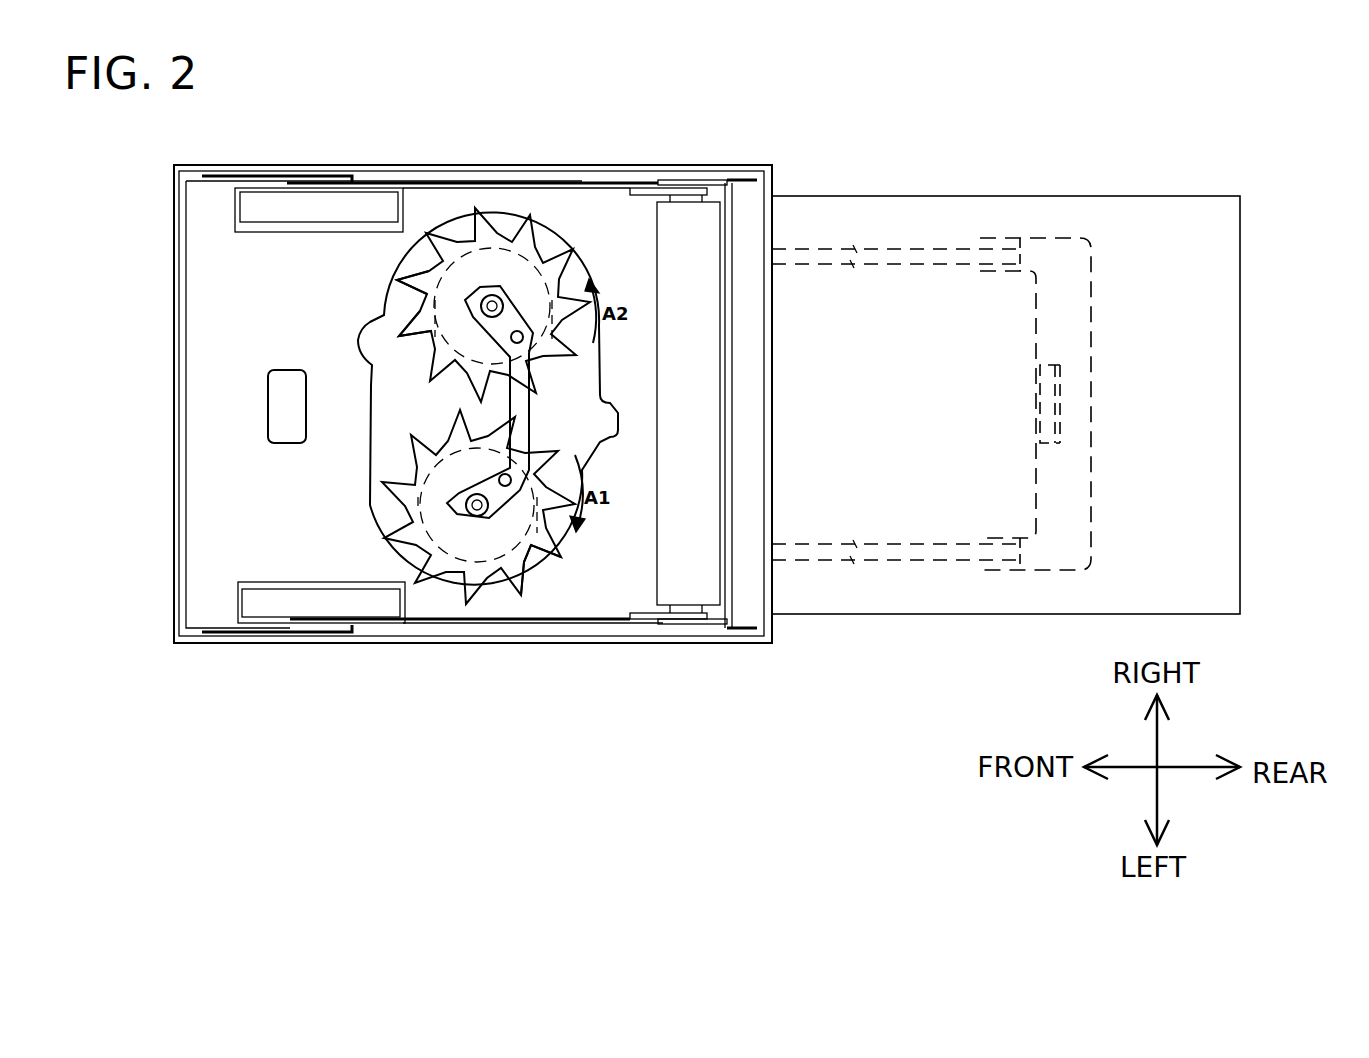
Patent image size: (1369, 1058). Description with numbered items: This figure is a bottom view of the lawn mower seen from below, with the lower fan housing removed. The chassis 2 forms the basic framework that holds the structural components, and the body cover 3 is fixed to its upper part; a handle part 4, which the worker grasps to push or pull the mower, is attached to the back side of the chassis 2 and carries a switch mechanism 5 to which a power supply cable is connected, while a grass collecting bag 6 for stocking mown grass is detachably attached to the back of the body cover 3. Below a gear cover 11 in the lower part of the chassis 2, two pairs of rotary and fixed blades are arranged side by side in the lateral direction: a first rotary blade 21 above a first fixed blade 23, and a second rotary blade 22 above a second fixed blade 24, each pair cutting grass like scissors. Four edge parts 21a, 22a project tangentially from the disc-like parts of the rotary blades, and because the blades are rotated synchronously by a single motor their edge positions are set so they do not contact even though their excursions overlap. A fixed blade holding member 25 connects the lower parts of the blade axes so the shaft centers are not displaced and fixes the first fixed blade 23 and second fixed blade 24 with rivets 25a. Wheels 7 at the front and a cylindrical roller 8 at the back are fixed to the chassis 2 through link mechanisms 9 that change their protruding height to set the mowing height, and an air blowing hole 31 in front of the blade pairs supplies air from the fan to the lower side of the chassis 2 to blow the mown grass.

The chassis 2 is at (245, 287).
The body cover 3 is at (174, 200).
The handle part 4 is at (1068, 238).
The switch mechanism 5 is at (1037, 402).
The grass collecting bag 6 is at (952, 614).
The wheels 7 is at (316, 205).
The roller 8 is at (700, 235).
The link mechanisms 9 is at (618, 183).
The gear cover 11 is at (378, 508).
The first rotary blade 21 is at (485, 565).
The edge parts 21a is at (545, 568).
The second rotary blade 22 is at (492, 245).
The edge parts 22a is at (433, 380).
The first fixed blade 23 is at (455, 600).
The second fixed blade 24 is at (490, 245).
The fixed blade holding member 25 is at (510, 418).
The rivets 25a is at (527, 462).
The air blowing hole 31 is at (268, 408).